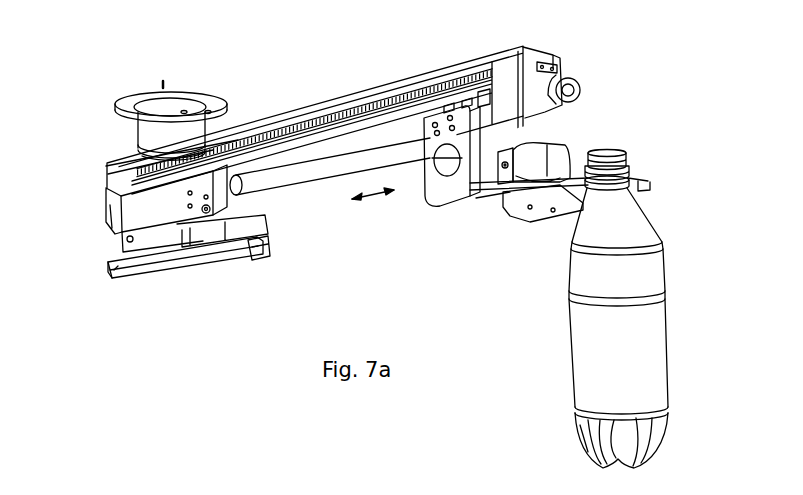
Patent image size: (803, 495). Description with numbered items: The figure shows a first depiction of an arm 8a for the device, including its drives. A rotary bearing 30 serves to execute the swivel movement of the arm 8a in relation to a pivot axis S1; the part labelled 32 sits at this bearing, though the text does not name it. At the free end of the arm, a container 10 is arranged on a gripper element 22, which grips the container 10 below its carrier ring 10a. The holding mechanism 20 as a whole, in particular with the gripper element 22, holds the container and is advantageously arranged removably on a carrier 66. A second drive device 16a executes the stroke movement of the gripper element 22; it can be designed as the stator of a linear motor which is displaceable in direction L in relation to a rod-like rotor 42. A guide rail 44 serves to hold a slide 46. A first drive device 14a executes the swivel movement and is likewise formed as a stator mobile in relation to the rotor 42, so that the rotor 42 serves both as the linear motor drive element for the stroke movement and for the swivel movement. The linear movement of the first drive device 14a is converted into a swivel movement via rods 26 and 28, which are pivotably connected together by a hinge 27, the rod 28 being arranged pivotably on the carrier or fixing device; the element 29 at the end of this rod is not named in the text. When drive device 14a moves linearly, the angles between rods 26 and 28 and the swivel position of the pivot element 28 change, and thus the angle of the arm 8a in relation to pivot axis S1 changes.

The arm 8a is at (382, 88).
The guide rail 44 is at (316, 140).
The rotor 42 is at (327, 163).
The slide 46 is at (470, 83).
The second drive device 16a is at (497, 100).
The rotary bearing 30 is at (134, 99).
The cylinder 32 is at (175, 122).
The pivot axis S1 is at (171, 85).
The first drive device 14a is at (140, 210).
The rod 26 is at (242, 230).
The hinge 27 is at (263, 261).
The rod 28 is at (192, 263).
The bar end 29 is at (118, 281).
The holding mechanism 20 is at (507, 206).
The carrier 66 is at (557, 162).
The container 10 is at (653, 293).
The carrier ring 10a is at (634, 173).
The gripper element 22 is at (641, 190).
The direction L is at (373, 206).